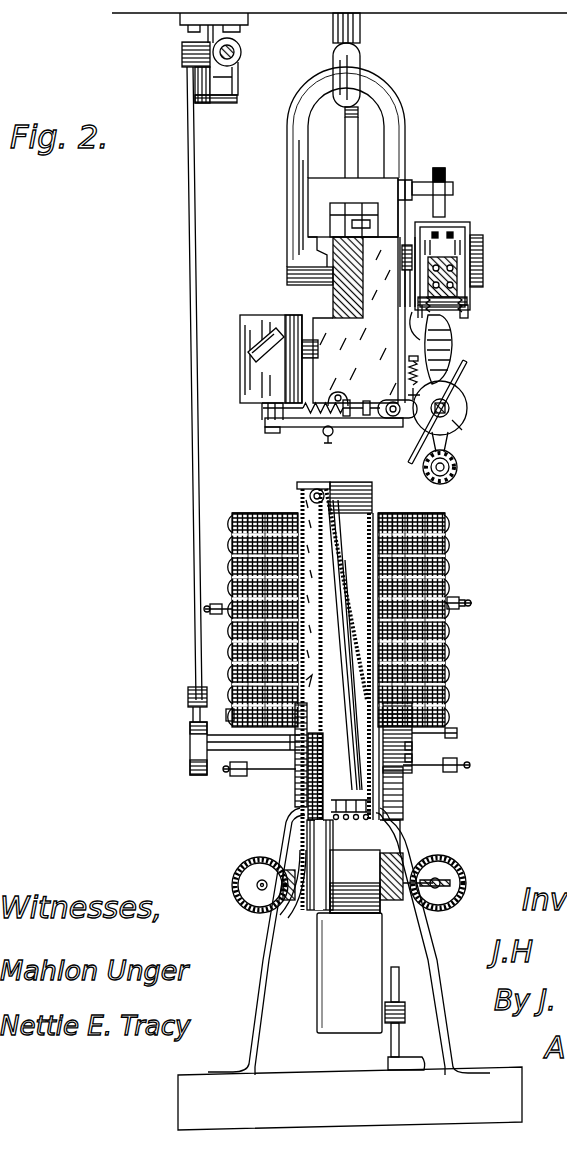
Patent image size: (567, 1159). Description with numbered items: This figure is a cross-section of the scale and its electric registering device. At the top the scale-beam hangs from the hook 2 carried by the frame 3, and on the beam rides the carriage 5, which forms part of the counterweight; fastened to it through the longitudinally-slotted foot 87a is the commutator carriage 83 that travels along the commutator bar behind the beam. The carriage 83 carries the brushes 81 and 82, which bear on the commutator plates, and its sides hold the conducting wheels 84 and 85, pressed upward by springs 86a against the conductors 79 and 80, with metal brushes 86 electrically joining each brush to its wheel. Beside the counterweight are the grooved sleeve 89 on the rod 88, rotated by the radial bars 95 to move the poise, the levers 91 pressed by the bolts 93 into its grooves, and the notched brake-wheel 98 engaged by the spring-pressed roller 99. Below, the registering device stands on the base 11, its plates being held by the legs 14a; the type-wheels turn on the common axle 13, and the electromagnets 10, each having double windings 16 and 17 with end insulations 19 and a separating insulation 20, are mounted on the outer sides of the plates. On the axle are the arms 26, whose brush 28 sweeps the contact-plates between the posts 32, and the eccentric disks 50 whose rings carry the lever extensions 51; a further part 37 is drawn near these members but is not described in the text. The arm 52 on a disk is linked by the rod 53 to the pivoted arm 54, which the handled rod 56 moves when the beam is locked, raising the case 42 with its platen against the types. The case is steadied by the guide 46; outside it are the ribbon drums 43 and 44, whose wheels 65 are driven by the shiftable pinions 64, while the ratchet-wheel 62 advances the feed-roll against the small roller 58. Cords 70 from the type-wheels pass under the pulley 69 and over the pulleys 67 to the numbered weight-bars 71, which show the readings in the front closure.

The hook 2 is at (362, 40).
The frame 3 is at (452, 13).
The carriage 5 is at (346, 235).
The electromagnets 10 is at (340, 620).
The base 11 is at (350, 1098).
The axle 13 is at (215, 752).
The legs 14a is at (267, 986).
The wire winding 16 is at (284, 513).
The wire winding 17 is at (251, 513).
The insulations 19 is at (232, 513).
The insulation 20 is at (265, 513).
The arms 26 is at (422, 757).
The electrical brush 28 is at (423, 746).
The posts 32 is at (460, 604).
The pin 37 is at (434, 733).
The case 42 is at (349, 973).
The ribbon drum 43 is at (438, 860).
The ribbon drum 44 is at (243, 881).
The guide 46 is at (406, 1018).
The eccentric disks 50 is at (437, 709).
The lever extensions 51 is at (297, 785).
The arm 52 is at (190, 712).
The rod 53 is at (204, 383).
The pivoted arm 54 is at (197, 78).
The rod 56 is at (241, 52).
The roller 58 is at (221, 715).
The ratchet-wheel 62 is at (300, 922).
The pinions 64 is at (283, 881).
The wheels 65 is at (244, 910).
The pulleys 67 is at (299, 485).
The pulley 69 is at (369, 852).
The cords 70 is at (347, 645).
The weight-bars 71 is at (315, 689).
The conductor 79 is at (430, 325).
The conductor 80 is at (452, 308).
The brush 81 is at (436, 232).
The brush 82 is at (451, 232).
The carriage 83 is at (468, 222).
The wheel 84 is at (423, 308).
The wheel 85 is at (468, 312).
The metal brush 86 is at (470, 298).
The springs 86a is at (481, 270).
The longitudinally-slotted foot 87a is at (414, 178).
The rod 88 is at (468, 400).
The sleeve 89 is at (466, 412).
The levers 91 is at (410, 380).
The bolts 93 is at (408, 360).
The radial bars 95 is at (468, 370).
The brake-wheel 98 is at (462, 432).
The spring-pressed roller 99 is at (400, 418).